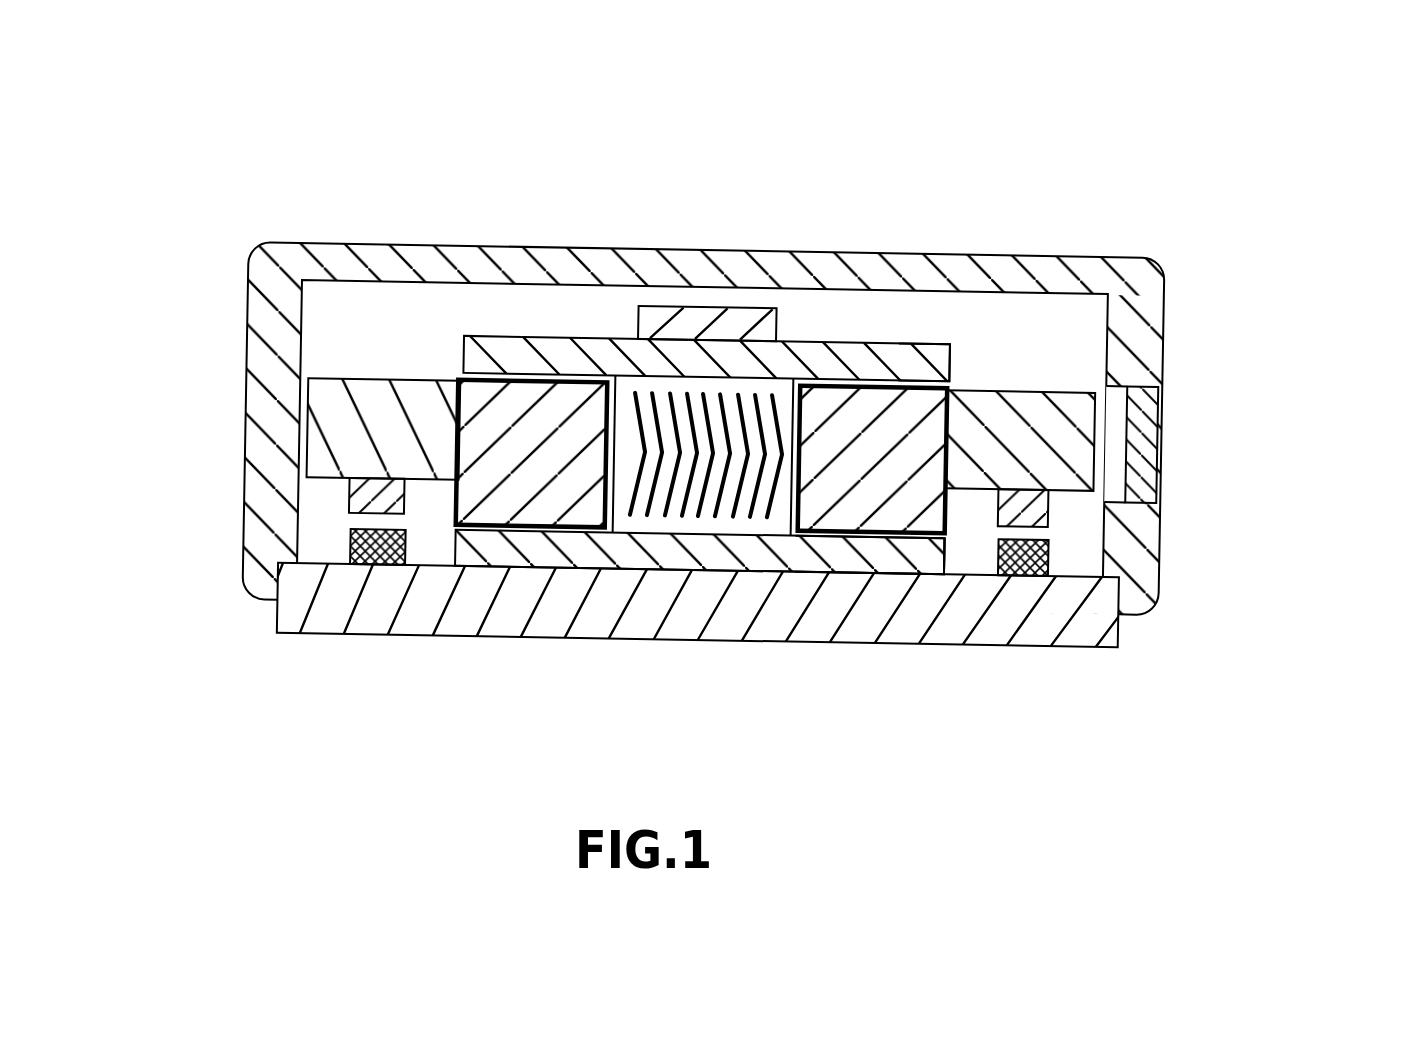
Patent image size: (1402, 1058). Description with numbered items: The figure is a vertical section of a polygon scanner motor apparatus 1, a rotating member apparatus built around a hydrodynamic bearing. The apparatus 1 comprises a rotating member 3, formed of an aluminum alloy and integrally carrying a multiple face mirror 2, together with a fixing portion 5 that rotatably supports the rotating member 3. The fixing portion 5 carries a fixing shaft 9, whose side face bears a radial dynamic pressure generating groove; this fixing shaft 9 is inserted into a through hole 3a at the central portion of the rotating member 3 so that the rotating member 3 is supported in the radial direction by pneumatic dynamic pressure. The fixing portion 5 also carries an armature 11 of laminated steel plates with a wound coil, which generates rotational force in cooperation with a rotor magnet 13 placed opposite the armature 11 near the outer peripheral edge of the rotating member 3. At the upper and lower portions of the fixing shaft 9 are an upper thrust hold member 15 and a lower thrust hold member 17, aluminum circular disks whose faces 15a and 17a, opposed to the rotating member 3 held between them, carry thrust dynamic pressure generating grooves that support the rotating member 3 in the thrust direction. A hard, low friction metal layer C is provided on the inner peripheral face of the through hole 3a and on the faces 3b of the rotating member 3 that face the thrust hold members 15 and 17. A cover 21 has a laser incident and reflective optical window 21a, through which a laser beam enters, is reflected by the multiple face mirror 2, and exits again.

The apparatus 1 is at (740, 408).
The multiple face mirror 2 is at (616, 441).
The rotating member 3 is at (356, 403).
The through hole 3a is at (588, 552).
The faces 3b is at (473, 680).
The fixing portion 5 is at (335, 600).
The fixing shaft 9 is at (671, 517).
The armature 11 is at (352, 532).
The rotor magnet 13 is at (335, 516).
The upper thrust hold member 15 is at (808, 354).
The face 15a is at (928, 387).
The lower thrust hold member 17 is at (885, 555).
The face 17a is at (930, 548).
The cover 21 is at (313, 243).
The laser incident and reflective optical window 21a is at (1130, 445).
The low friction metal layer C is at (612, 440).